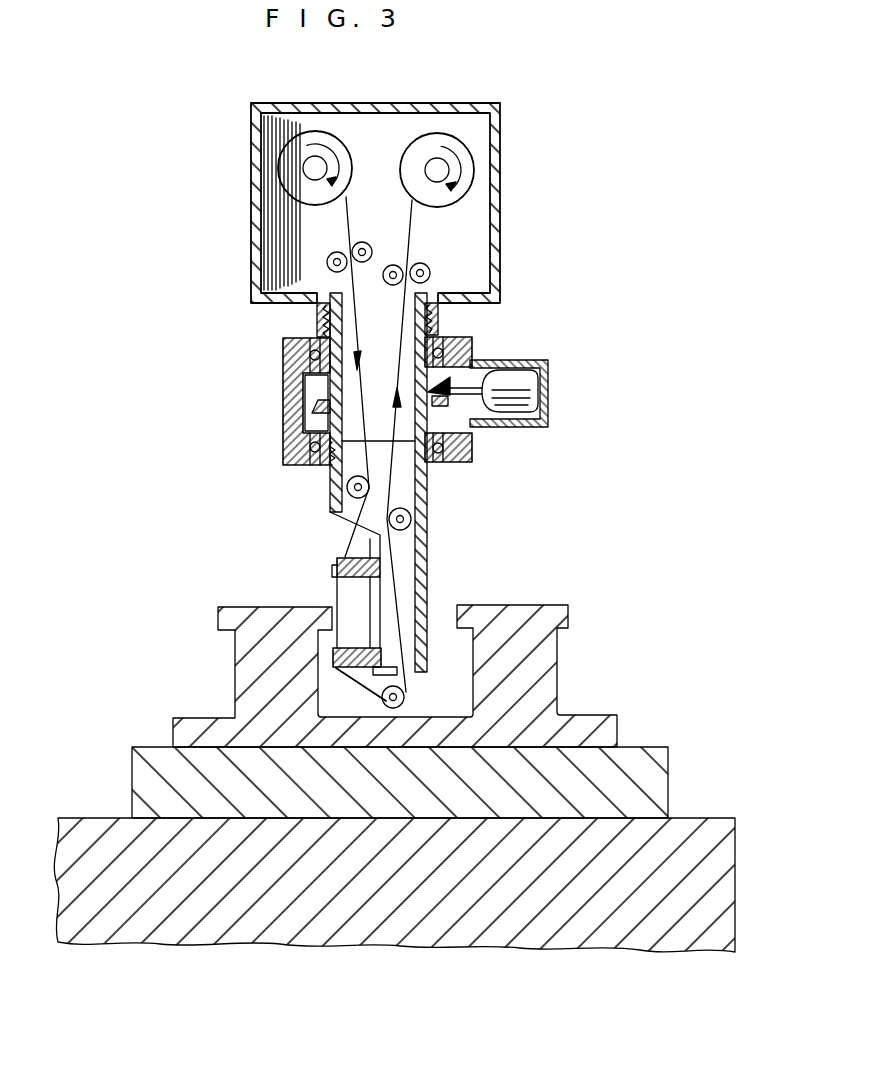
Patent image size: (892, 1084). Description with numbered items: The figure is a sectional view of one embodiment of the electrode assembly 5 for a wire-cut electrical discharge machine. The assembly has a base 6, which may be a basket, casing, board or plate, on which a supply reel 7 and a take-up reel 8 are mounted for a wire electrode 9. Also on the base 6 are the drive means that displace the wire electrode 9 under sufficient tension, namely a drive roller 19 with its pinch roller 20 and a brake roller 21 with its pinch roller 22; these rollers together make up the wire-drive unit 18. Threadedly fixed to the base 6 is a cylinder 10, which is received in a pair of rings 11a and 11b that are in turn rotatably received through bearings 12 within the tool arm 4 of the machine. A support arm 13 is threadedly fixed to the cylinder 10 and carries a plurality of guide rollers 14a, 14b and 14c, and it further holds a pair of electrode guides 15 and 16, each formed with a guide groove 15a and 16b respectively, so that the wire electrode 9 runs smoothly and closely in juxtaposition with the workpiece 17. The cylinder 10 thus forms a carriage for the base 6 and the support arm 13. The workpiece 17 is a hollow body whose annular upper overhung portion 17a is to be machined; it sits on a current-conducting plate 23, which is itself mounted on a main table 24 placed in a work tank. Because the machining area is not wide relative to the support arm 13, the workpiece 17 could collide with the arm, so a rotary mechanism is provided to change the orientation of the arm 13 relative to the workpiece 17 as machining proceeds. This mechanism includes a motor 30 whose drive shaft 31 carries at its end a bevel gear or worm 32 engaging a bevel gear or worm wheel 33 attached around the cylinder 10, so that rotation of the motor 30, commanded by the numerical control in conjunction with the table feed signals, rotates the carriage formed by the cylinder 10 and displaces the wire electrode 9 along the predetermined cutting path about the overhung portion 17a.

The tool arm 4 is at (283, 362).
The electrode assembly 5 is at (181, 332).
The base 6 is at (501, 199).
The supply reel 7 is at (290, 160).
The take-up reel 8 is at (465, 150).
The wire electrode 9 is at (413, 237).
The cylinder 10 is at (326, 330).
The ring 11a is at (320, 337).
The ring 11b is at (334, 470).
The bearings 12 is at (467, 340).
The support arm 13 is at (428, 545).
The guide roller 14a is at (352, 493).
The guide roller 14b is at (405, 697).
The guide roller 14c is at (412, 519).
The electrode guide 15 is at (342, 556).
The guide groove 15a is at (334, 569).
The electrode guide 16 is at (352, 647).
The guide groove 16b is at (337, 669).
The workpiece 17 is at (236, 670).
The upper overhung portion 17a is at (218, 614).
The wire-drive unit 18 is at (377, 290).
The drive roller 19 is at (431, 272).
The pinch roller 20 is at (393, 265).
The brake roller 21 is at (328, 259).
The pinch roller 22 is at (362, 242).
The current-conducting plate 23 is at (138, 749).
The main table 24 is at (89, 822).
The motor 30 is at (549, 388).
The drive shaft 31 is at (480, 362).
The bevel gear or worm 32 is at (470, 415).
The bevel gear or worm wheel 33 is at (318, 412).